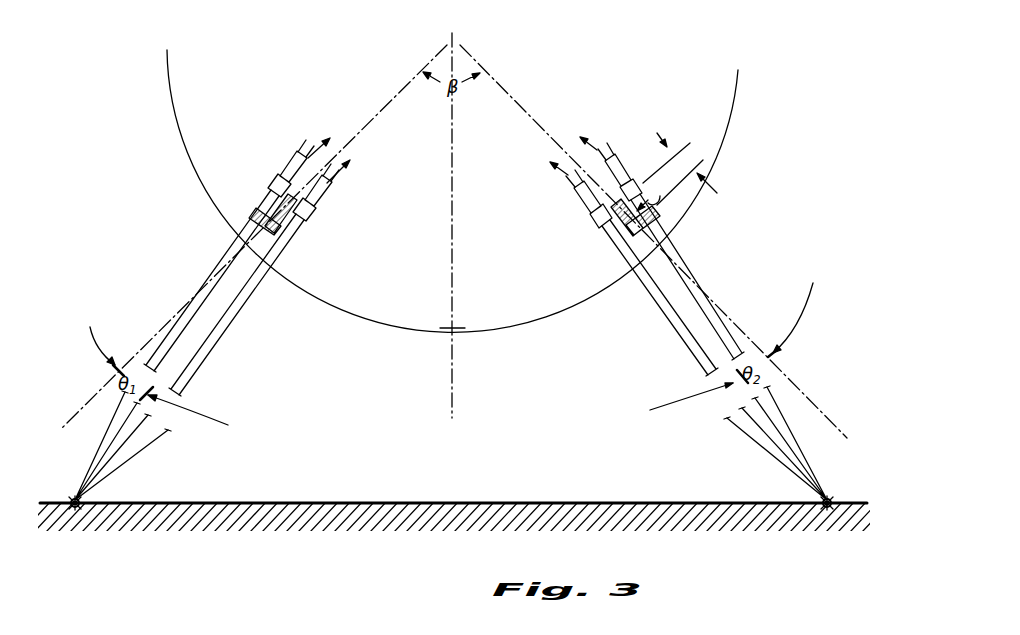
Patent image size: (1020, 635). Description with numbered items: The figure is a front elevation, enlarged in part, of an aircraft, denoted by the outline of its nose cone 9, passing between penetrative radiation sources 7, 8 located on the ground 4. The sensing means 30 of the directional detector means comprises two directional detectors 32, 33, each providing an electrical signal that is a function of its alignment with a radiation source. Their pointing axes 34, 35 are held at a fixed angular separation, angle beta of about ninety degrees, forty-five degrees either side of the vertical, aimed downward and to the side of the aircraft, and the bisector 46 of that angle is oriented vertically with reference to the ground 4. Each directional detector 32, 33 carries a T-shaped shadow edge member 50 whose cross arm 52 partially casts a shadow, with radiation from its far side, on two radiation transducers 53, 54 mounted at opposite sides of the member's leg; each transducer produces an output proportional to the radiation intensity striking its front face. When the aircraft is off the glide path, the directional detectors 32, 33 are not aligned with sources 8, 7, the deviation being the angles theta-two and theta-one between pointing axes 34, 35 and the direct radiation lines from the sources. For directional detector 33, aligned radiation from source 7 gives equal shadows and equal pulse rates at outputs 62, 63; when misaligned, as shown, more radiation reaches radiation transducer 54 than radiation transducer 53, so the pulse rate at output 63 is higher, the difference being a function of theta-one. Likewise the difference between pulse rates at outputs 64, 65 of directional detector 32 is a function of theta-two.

The ground 4 is at (608, 503).
The source 7 is at (72, 500).
The source 8 is at (822, 503).
The nose cone 9 is at (725, 134).
The sensing means 30 is at (463, 225).
The directional detector 32 is at (673, 203).
The directional detector 33 is at (227, 168).
The pointing axis 34 is at (515, 99).
The pointing axis 35 is at (363, 127).
The bisector 46 is at (456, 150).
The shadow edge member 50 is at (250, 212).
The cross arm 52 is at (660, 215).
The radiation transducer 53 is at (279, 175).
The radiation transducer 54 is at (315, 206).
The output 62 is at (306, 150).
The output 63 is at (337, 179).
The output 64 is at (565, 183).
The output 65 is at (603, 150).